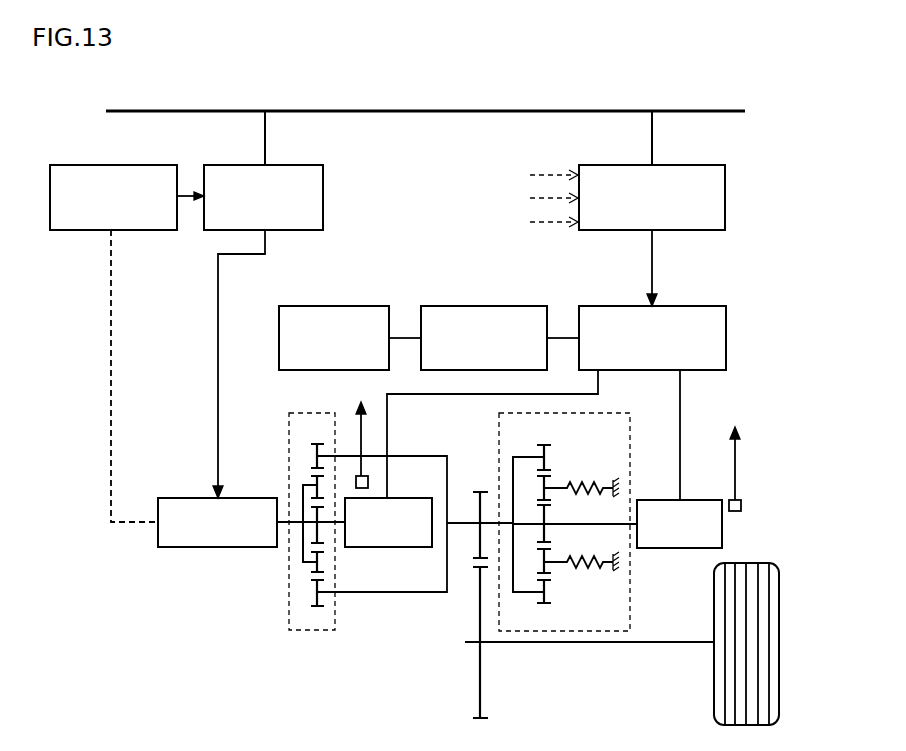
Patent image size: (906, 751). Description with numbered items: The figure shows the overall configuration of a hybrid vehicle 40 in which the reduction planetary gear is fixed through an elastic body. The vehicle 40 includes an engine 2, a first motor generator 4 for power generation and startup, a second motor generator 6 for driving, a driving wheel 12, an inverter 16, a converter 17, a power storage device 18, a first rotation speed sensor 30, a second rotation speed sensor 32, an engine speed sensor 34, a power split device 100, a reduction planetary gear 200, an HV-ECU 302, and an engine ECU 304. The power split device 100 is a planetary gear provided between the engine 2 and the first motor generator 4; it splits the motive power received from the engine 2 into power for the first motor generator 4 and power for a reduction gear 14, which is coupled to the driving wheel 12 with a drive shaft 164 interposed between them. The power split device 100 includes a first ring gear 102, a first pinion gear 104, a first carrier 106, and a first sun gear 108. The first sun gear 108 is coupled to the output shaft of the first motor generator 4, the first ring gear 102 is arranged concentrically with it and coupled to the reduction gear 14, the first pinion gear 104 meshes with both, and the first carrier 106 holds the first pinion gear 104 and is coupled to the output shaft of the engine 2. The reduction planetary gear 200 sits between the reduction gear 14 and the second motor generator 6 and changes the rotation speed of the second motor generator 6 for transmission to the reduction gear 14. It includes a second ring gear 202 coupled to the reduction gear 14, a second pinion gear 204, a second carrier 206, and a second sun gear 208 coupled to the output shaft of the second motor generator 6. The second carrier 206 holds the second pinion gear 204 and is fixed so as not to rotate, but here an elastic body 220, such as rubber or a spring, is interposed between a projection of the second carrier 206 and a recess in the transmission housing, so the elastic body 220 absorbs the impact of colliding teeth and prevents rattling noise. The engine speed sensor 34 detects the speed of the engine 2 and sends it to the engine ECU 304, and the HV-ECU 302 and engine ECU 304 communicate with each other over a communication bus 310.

The vehicle 40 is at (717, 64).
The communication bus 310 is at (722, 110).
The engine speed sensor 34 is at (108, 163).
The engine ECU 304 is at (283, 164).
The HV-ECU 302 is at (605, 165).
The power storage device 18 is at (345, 305).
The converter 17 is at (500, 305).
The inverter 16 is at (690, 305).
The engine 2 is at (247, 498).
The first motor generator 4 is at (403, 498).
The power split device 100 is at (316, 413).
The first rotation speed sensor 30 is at (357, 475).
The first carrier 106 is at (302, 497).
The first sun gear 108 is at (320, 533).
The first pinion gear 104 is at (313, 567).
The first ring gear 102 is at (313, 597).
The reduction gear 14 is at (457, 632).
The reduction planetary gear 200 is at (616, 415).
The second sun gear 208 is at (551, 529).
The second pinion gear 204 is at (551, 557).
The second carrier 206 is at (553, 487).
The second ring gear 202 is at (542, 600).
The elastic body 220 is at (586, 471).
The second motor generator 6 is at (691, 499).
The second rotation speed sensor 32 is at (741, 499).
The driving wheel 12 is at (753, 562).
The drive shaft 164 is at (636, 646).